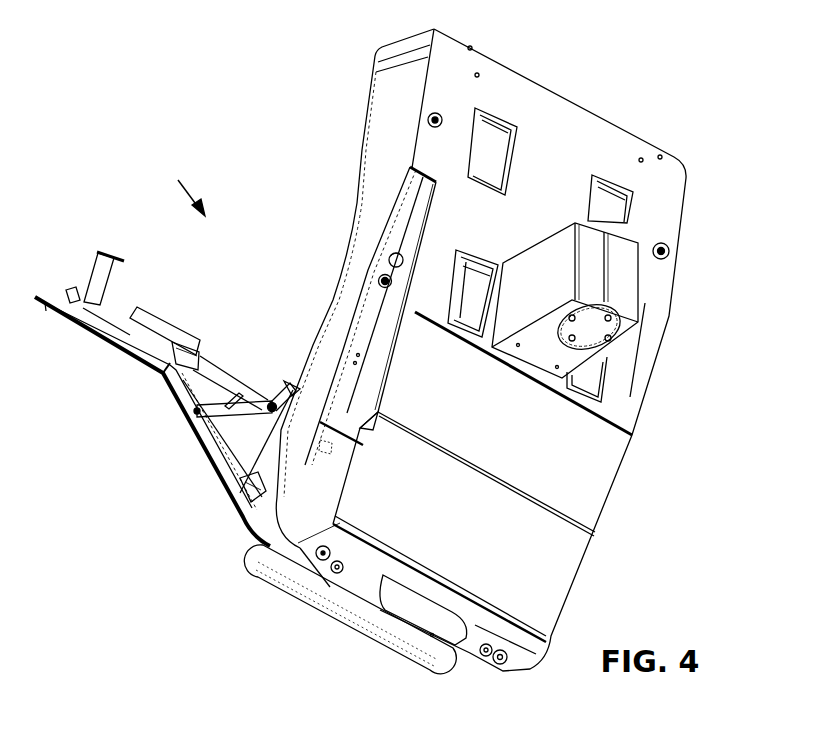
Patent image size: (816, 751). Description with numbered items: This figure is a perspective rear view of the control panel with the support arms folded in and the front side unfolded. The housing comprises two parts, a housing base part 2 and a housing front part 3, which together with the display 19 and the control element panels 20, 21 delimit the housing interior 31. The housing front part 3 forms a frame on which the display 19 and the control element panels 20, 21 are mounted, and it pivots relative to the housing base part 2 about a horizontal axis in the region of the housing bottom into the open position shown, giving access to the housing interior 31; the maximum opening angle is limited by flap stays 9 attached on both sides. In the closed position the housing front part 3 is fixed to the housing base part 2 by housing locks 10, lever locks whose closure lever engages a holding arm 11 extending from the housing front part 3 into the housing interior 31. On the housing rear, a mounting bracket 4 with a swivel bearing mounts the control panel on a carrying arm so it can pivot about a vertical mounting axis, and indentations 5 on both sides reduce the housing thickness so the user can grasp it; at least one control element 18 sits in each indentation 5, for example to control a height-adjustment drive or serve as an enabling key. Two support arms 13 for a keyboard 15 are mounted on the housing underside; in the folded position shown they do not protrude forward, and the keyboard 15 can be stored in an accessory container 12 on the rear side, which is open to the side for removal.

The housing base part 2 is at (343, 305).
The housing front part 3 is at (140, 347).
The mounting bracket 4 is at (550, 263).
The indentations 5 is at (343, 380).
The flap stays 9 is at (228, 405).
The housing locks 10 is at (428, 116).
The holding arm 11 is at (100, 253).
The accessory container 12 is at (368, 487).
The support arms 13 is at (377, 582).
The keyboard 15 is at (317, 460).
The control element 18 is at (398, 260).
The display 19 is at (177, 345).
The control element panel 20 is at (242, 440).
The control element panel 21 is at (245, 488).
The housing interior 31 is at (176, 184).